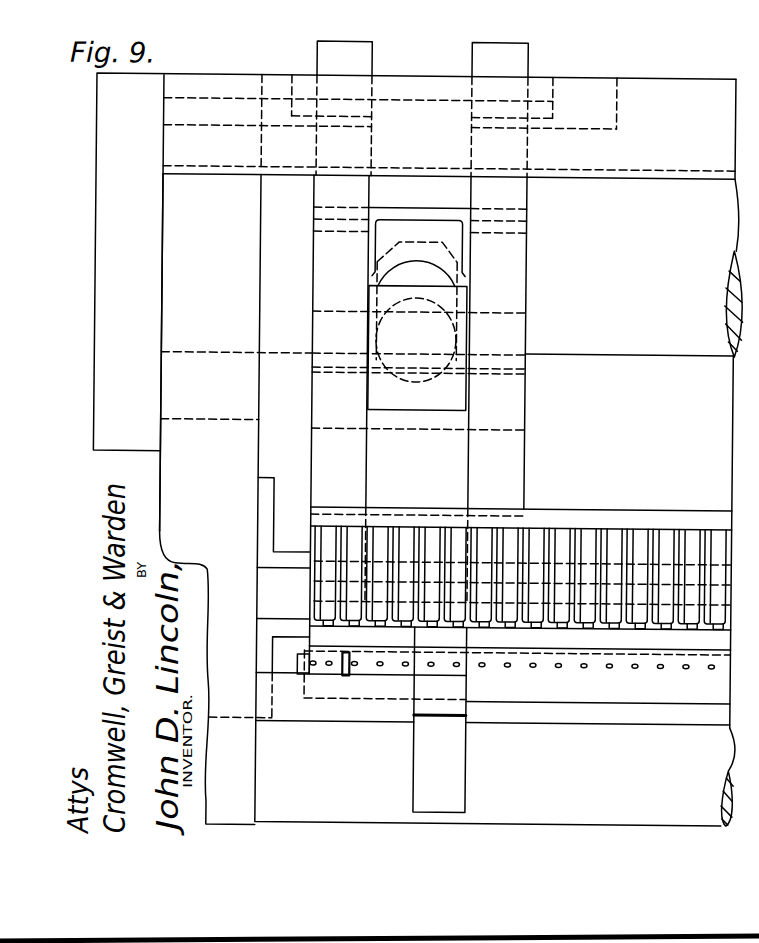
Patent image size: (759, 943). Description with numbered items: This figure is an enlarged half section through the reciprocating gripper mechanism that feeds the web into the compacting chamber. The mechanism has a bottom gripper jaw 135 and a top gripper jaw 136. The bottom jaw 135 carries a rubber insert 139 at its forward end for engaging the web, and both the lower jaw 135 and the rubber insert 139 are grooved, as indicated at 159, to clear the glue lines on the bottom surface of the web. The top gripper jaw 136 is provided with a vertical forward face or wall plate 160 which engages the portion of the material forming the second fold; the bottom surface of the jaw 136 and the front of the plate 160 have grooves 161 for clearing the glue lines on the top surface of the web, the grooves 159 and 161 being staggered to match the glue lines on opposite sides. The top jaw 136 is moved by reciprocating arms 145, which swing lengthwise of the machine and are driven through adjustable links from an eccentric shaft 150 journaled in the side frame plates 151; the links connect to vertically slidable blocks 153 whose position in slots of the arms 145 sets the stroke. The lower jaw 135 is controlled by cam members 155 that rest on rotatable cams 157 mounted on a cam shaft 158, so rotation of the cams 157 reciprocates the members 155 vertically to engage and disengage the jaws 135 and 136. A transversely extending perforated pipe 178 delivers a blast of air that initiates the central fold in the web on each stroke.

The bottom gripper jaw 135 is at (608, 638).
The top gripper jaw 136 is at (692, 527).
The rubber insert 139 is at (695, 630).
The reciprocating arms 145 is at (509, 453).
The eccentric shaft 150 is at (660, 262).
The side frame plates 151 is at (237, 353).
The vertically slidable blocks 153 is at (454, 390).
The cam members 155 is at (438, 685).
The rotatable cams 157 is at (430, 752).
The cam shaft 158 is at (724, 741).
The grooves 159 is at (553, 624).
The vertical forward face or wall plate 160 is at (619, 535).
The grooves 161 is at (602, 542).
The perforated tubular member or pipe 178 is at (696, 692).